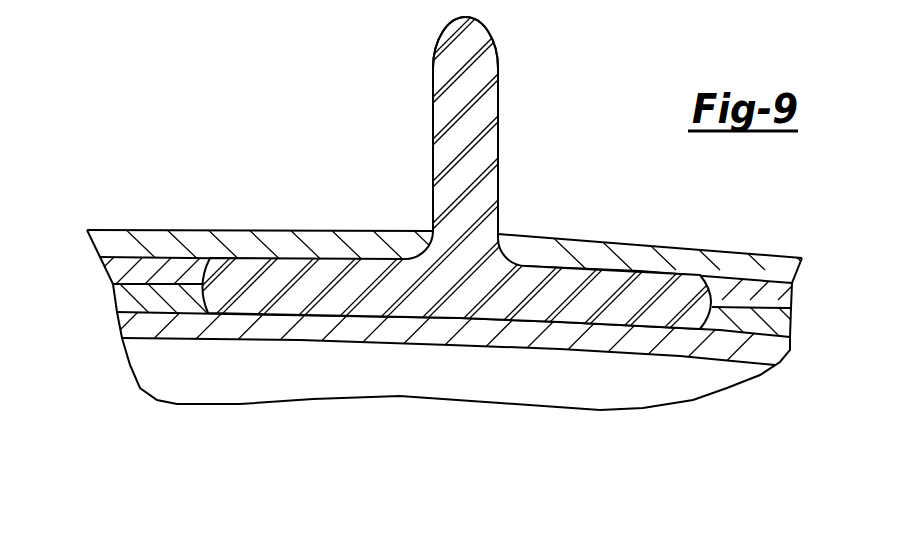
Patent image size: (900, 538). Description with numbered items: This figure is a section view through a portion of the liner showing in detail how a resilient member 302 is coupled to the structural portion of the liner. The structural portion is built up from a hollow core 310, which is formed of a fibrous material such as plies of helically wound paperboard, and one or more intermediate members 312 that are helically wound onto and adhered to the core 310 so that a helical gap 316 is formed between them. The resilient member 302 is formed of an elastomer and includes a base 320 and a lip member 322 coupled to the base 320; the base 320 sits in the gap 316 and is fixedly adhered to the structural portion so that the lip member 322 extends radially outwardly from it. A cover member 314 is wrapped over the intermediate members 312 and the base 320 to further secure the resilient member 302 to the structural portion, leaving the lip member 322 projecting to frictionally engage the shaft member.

The resilient member 302 is at (450, 172).
The hollow core 310 is at (302, 332).
The intermediate member 312 is at (780, 328).
The cover member 314 is at (708, 260).
The helical gap 316 is at (462, 316).
The base 320 is at (330, 268).
The lip member 322 is at (460, 53).